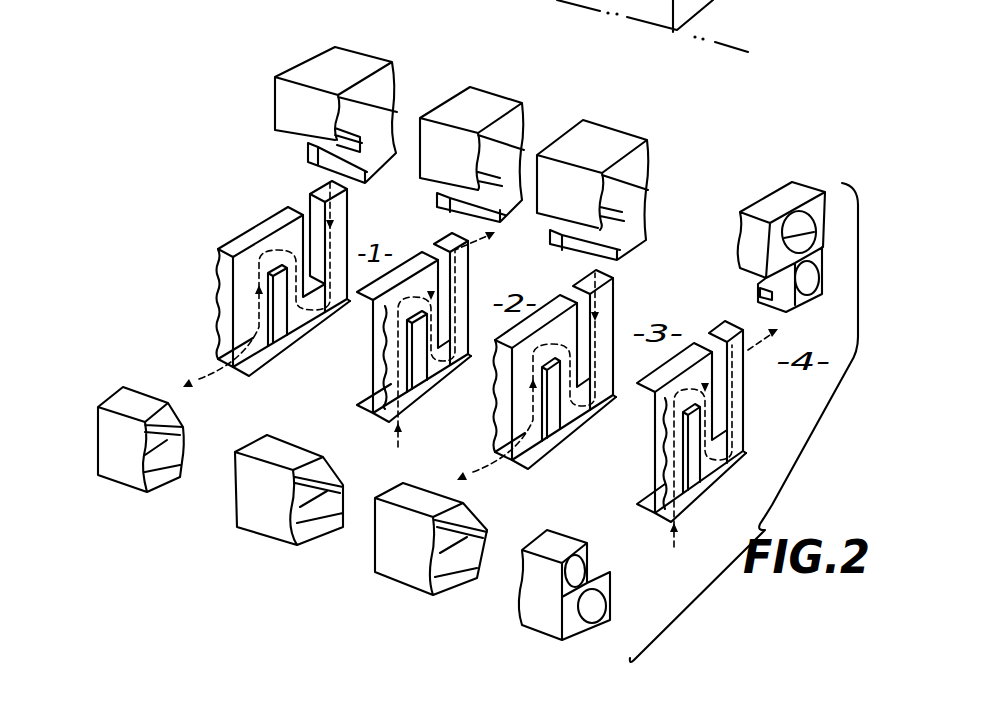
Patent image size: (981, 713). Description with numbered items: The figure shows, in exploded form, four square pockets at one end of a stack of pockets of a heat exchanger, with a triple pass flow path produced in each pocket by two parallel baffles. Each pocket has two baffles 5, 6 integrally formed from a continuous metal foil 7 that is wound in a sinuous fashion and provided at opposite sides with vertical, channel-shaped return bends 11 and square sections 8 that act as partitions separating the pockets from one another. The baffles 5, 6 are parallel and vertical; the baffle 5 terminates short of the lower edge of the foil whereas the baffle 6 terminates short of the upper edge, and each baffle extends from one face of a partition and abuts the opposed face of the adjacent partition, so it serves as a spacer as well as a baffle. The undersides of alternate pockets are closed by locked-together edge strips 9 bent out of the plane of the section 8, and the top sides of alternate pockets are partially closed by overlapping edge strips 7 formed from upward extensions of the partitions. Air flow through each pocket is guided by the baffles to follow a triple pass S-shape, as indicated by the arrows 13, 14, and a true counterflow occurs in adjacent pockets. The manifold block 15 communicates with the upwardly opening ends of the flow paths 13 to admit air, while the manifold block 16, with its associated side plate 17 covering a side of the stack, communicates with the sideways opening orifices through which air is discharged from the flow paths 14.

The baffle 5 is at (307, 247).
The baffle 6 is at (263, 348).
The continuous metal foil 7 is at (257, 243).
The square section 8 is at (290, 330).
The edge strip 9 is at (313, 337).
The return bend 11 is at (227, 307).
The arrow (gas flow path) 13 is at (258, 282).
The arrow (flow path) 14 is at (357, 385).
The manifold block 15 is at (623, 140).
The manifold block 16 is at (785, 318).
The side plate 17 is at (310, 65).